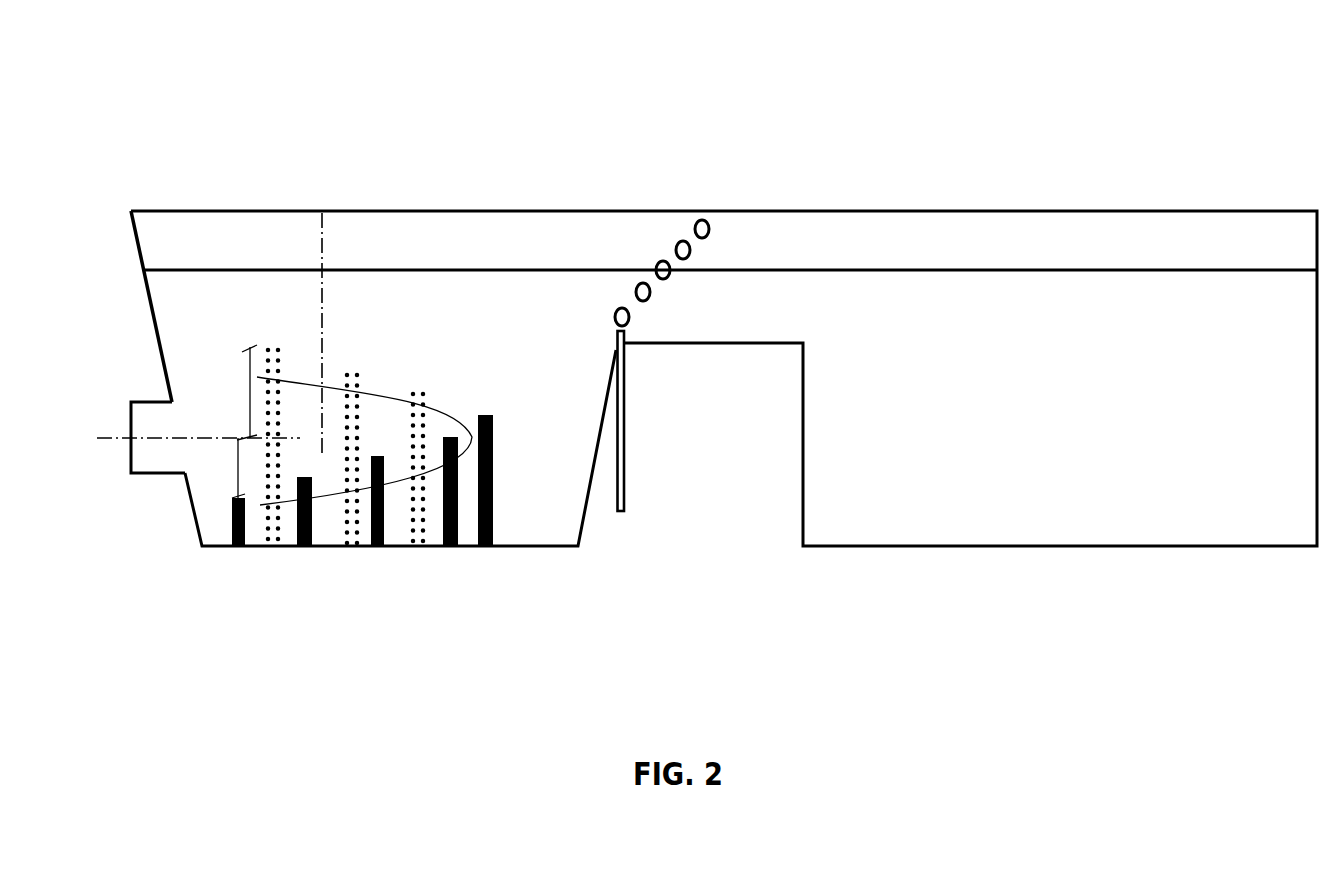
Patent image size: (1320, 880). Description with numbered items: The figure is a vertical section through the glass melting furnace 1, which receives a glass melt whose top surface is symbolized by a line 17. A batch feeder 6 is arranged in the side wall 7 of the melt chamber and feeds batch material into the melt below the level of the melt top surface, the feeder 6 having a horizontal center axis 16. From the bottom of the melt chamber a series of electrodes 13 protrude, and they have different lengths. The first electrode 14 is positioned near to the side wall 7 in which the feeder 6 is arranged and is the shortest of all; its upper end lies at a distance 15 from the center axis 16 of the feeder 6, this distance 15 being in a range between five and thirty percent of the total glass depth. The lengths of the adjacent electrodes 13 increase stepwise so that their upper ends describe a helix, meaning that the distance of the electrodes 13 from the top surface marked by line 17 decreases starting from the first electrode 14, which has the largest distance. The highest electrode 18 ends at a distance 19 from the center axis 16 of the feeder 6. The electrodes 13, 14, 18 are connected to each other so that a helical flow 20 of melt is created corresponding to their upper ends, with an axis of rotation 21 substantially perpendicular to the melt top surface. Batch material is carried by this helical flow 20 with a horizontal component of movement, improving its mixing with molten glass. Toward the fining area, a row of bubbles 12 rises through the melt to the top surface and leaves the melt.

The glass melting furnace 1 is at (1012, 140).
The batch feeder 6 is at (148, 402).
The side wall 7 is at (146, 288).
The bubbles 12 is at (702, 220).
The electrodes 13 is at (485, 410).
The first electrode 14 is at (237, 546).
The distance 15 is at (238, 478).
The center axis 16 is at (113, 442).
The line 17 is at (424, 270).
The highest electrode 18 is at (275, 530).
The distance 19 is at (250, 392).
The helical flow 20 is at (293, 378).
The axis of rotation 21 is at (322, 213).